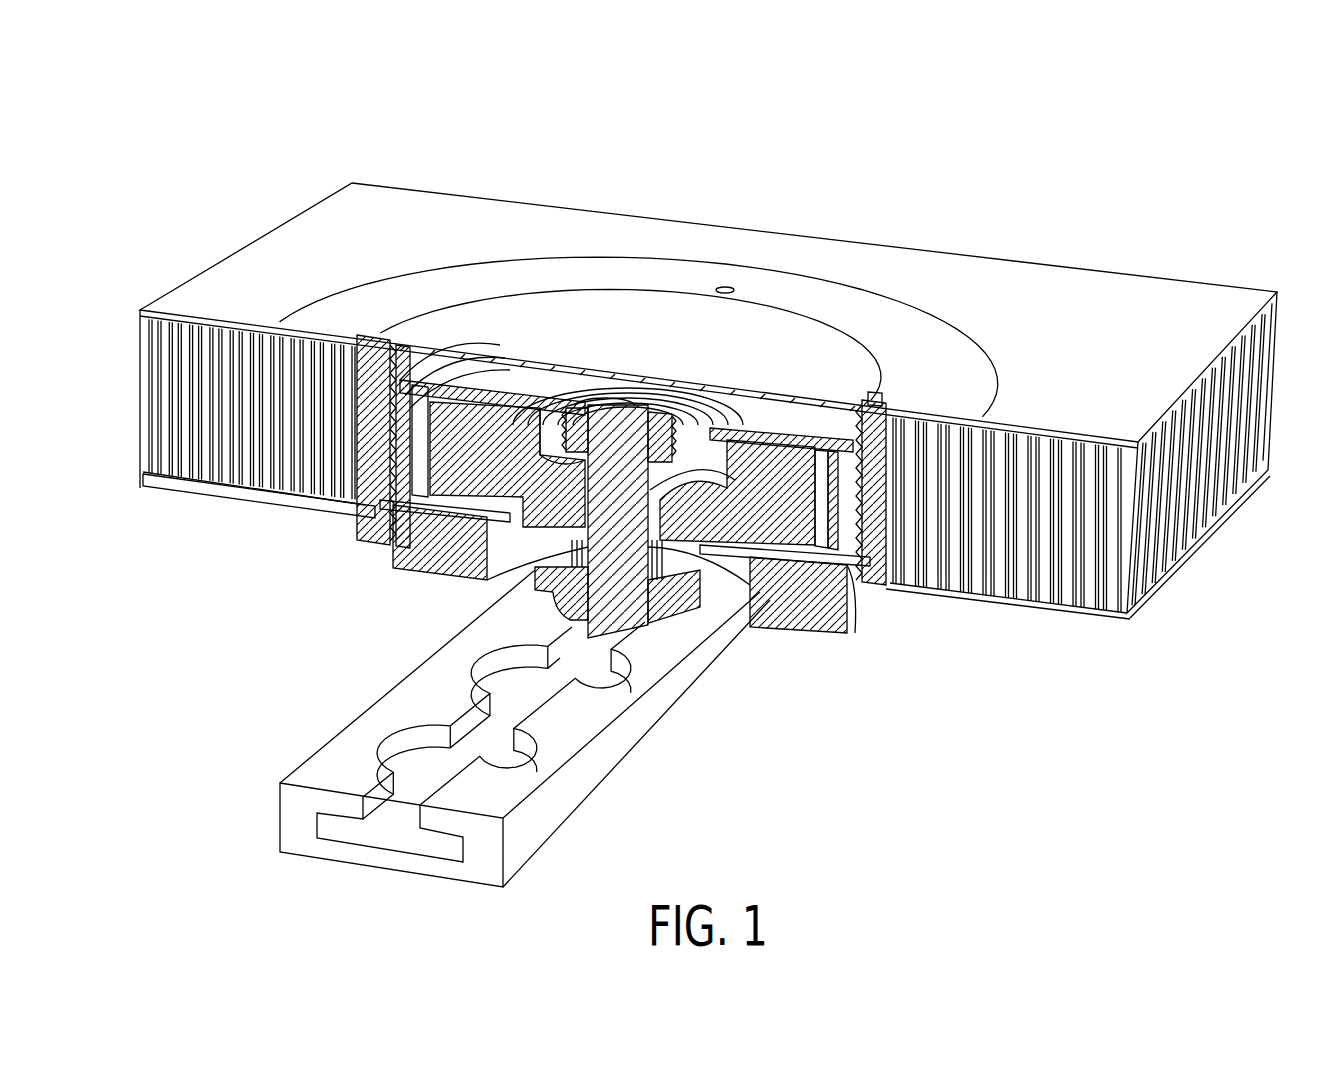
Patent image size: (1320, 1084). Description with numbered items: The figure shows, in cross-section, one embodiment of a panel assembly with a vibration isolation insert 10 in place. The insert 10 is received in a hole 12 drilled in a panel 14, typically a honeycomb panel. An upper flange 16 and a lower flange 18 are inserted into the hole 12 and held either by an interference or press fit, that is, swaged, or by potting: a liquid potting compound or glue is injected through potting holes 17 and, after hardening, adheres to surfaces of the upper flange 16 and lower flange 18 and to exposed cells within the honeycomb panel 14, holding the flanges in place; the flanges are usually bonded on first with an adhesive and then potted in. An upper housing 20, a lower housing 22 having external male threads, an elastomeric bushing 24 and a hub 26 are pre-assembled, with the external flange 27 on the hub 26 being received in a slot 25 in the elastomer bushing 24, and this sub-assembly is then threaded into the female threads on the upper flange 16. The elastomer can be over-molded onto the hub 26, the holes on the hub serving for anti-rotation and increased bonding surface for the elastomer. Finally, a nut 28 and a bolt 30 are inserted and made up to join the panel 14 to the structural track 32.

The insert 10 is at (192, 121).
The hole 12 is at (370, 403).
The panel 14 is at (325, 215).
The upper flange 16 is at (977, 352).
The potting holes 17 is at (870, 400).
The lower flange 18 is at (300, 503).
The upper housing 20 is at (795, 440).
The lower housing 22 is at (837, 563).
The elastomeric bushing 24 is at (465, 495).
The slot 25 is at (773, 553).
The hub 26 is at (735, 440).
The external flange 27 is at (530, 450).
The nut 28 is at (590, 410).
The bolt 30 is at (620, 592).
The structural track 32 is at (630, 750).